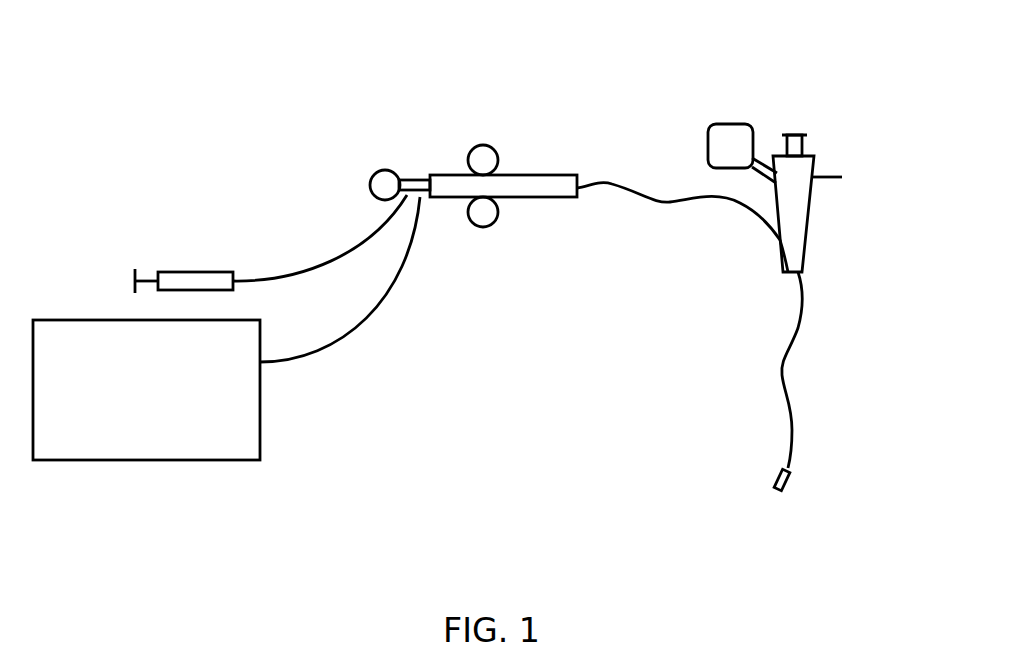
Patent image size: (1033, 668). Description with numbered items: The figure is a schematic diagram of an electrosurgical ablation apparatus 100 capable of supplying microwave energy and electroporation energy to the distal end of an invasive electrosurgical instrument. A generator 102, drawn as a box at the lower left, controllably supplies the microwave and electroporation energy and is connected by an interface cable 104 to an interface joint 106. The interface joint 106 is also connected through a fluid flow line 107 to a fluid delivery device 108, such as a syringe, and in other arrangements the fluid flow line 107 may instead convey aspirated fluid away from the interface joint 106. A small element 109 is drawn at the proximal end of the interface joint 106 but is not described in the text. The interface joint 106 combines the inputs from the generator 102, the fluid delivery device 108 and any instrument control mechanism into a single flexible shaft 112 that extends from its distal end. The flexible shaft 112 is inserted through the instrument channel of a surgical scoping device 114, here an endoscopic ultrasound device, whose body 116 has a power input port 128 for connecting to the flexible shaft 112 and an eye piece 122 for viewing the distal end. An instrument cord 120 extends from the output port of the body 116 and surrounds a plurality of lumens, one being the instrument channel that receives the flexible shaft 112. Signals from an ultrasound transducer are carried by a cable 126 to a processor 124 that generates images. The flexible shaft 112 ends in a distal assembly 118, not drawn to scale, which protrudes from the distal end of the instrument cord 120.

The electrosurgical ablation apparatus 100 is at (404, 486).
The generator 102 is at (172, 402).
The interface cable 104 is at (368, 323).
The interface joint 106 is at (557, 173).
The fluid flow line 107 is at (320, 268).
The fluid delivery device 108 is at (195, 268).
The pressure sensor 109 is at (415, 178).
The flexible shaft 112 is at (673, 202).
The surgical scoping device 114 is at (858, 195).
The body 116 is at (797, 237).
The distal assembly 118 is at (790, 478).
The instrument cord 120 is at (778, 377).
The eye piece 122 is at (800, 145).
The processor 124 is at (723, 138).
The cable 126 is at (760, 155).
The power input port 128 is at (780, 247).